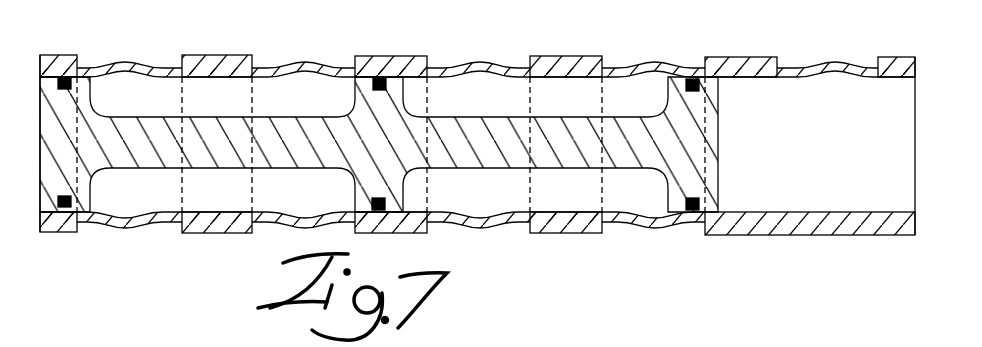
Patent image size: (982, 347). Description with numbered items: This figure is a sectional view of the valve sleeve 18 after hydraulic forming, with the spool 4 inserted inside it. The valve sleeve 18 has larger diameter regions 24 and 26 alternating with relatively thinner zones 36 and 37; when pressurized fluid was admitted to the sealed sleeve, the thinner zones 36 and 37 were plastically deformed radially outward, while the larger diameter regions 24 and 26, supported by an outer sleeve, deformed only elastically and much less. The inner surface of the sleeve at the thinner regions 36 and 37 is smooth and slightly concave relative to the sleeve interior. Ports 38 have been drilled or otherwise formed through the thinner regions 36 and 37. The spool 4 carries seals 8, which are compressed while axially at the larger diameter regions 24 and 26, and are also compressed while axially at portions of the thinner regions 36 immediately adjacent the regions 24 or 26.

The spool 4 is at (718, 153).
The seals 8 is at (65, 85).
The valve sleeve 18 is at (415, 51).
The larger diameter region 24 is at (62, 64).
The larger diameter region 26 is at (793, 224).
The thinner zone 36 is at (150, 73).
The thinner zone 37 is at (806, 77).
The ports 38 is at (135, 66).